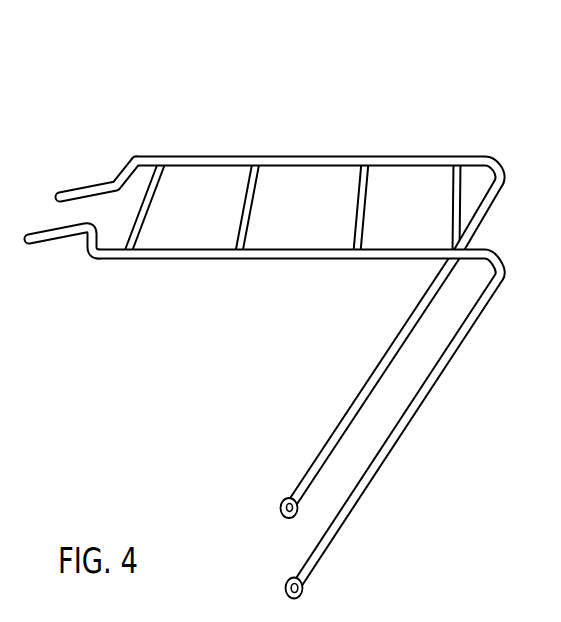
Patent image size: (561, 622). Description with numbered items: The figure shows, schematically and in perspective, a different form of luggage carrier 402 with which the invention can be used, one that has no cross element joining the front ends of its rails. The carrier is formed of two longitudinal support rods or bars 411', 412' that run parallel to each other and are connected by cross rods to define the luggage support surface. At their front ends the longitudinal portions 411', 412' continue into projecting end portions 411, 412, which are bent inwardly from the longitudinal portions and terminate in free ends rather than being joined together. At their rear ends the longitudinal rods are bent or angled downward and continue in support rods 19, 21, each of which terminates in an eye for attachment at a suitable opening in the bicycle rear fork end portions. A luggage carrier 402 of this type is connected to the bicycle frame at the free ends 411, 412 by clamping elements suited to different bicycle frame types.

The luggage carrier 402 is at (278, 312).
The projecting end portion 411 is at (98, 160).
The longitudinal support rod 411' is at (318, 127).
The projecting end portion 412 is at (64, 269).
The longitudinal support rod 412' is at (299, 293).
The support rod 19 is at (343, 420).
The support rod 21 is at (433, 381).